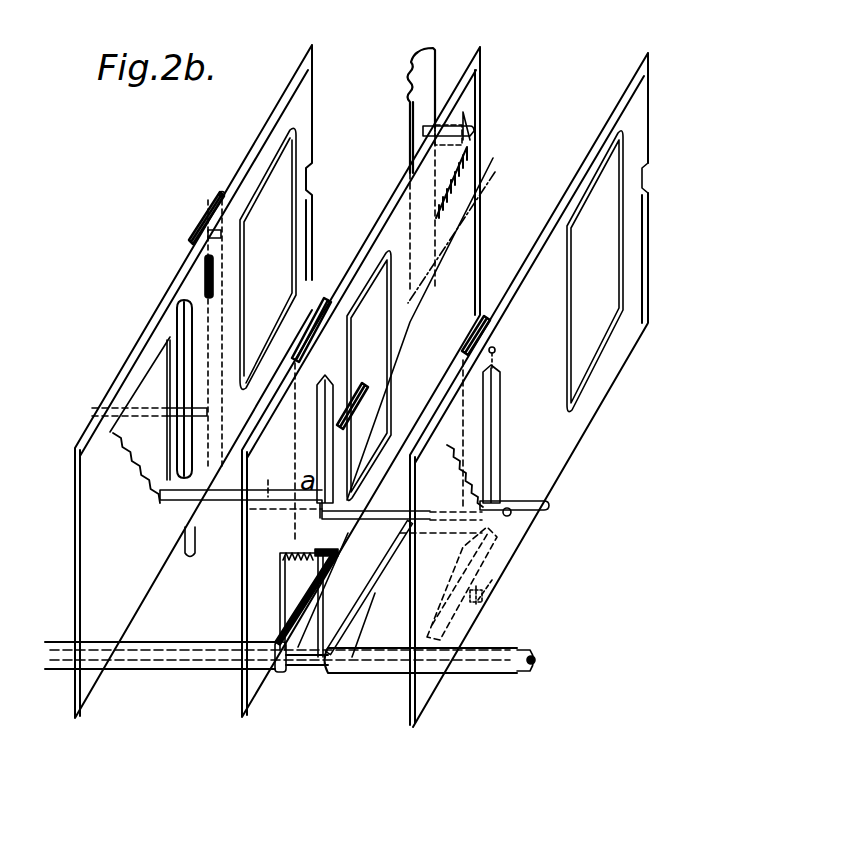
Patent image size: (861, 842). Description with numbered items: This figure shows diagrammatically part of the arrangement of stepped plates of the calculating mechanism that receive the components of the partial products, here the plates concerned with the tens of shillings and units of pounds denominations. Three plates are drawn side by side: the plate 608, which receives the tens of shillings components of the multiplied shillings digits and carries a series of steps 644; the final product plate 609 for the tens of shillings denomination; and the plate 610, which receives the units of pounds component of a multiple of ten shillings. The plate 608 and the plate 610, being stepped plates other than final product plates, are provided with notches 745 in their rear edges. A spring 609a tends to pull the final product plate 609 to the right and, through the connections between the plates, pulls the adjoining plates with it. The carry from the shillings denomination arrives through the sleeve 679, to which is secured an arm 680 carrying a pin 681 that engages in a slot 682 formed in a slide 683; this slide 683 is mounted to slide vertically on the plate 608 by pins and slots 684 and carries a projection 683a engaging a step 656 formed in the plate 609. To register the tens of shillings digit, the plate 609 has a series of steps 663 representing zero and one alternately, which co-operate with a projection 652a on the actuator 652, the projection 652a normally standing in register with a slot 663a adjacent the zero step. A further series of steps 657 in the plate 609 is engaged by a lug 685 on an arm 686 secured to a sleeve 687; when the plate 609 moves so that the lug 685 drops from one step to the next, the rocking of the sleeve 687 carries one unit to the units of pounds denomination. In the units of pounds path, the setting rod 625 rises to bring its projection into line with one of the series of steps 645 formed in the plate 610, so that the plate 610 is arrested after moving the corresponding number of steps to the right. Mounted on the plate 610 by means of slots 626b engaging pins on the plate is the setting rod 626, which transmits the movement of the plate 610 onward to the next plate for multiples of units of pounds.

The plate 610 is at (80, 713).
The final product plate 609 is at (247, 713).
The plate 608 is at (410, 713).
The notch 745 is at (640, 173).
The actuator 652 is at (428, 58).
The projection 652a is at (467, 127).
The slot 663a is at (465, 152).
The series of steps 663 is at (455, 183).
The spring 609a is at (410, 312).
The slot 626b is at (212, 278).
The series of steps 645 is at (165, 465).
The setting rod 626 is at (187, 557).
The step 656 is at (315, 517).
The series of steps 644 is at (447, 450).
The pins and slots 684 is at (496, 351).
The slide 683 is at (477, 445).
The projection 683a is at (372, 507).
The setting rod 625 is at (308, 745).
The series of steps 657 is at (300, 562).
The lug 685 is at (330, 547).
The arm 686 is at (333, 563).
The pin 681 is at (500, 543).
The slot 682 is at (480, 603).
The sleeve 687 is at (187, 663).
The arm 680 is at (353, 635).
The sleeve 679 is at (507, 677).